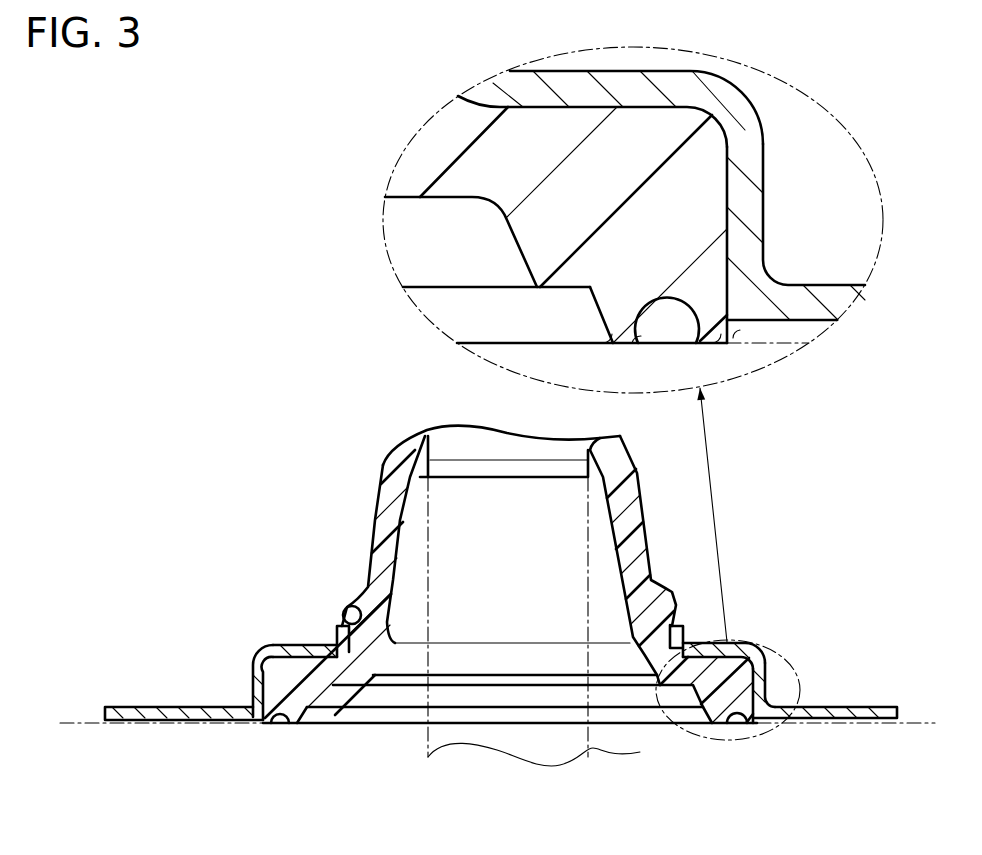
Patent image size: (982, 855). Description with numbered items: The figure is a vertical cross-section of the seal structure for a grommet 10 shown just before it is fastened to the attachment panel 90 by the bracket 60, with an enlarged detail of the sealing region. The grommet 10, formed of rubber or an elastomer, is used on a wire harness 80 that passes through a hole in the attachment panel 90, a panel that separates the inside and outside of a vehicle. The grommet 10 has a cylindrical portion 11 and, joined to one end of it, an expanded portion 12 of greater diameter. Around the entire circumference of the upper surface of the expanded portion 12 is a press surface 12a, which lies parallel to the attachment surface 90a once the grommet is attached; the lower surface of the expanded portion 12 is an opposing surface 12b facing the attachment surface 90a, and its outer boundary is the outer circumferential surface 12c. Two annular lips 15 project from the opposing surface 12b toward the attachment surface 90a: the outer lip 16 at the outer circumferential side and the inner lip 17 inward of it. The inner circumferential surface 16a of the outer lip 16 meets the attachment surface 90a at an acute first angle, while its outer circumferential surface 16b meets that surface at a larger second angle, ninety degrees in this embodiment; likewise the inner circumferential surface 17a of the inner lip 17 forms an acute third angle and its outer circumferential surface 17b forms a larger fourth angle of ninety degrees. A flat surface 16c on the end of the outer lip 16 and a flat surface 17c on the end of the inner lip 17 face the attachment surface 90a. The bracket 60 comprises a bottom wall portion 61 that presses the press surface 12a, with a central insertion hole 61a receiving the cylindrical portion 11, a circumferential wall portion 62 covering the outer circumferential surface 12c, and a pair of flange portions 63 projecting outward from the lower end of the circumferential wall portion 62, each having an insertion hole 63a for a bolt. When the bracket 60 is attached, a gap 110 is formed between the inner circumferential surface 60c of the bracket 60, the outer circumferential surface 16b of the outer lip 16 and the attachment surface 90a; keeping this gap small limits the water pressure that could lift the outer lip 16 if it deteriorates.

The grommet 10 is at (543, 394).
The cylindrical portion 11 is at (645, 515).
The expanded portion 12 is at (540, 394).
The press surface 12a is at (683, 105).
The opposing surface 12b is at (543, 292).
The outer circumferential surface 12c is at (728, 194).
The lips 15 is at (591, 474).
The outer lip 16 is at (591, 481).
The inner circumferential surface of the outer lip 16a is at (689, 318).
The outer circumferential surface of the outer lip 16b is at (752, 275).
The flat surface 16c is at (708, 343).
The inner lip 17 is at (512, 474).
The inner circumferential surface of the inner lip 17a is at (592, 298).
The outer circumferential surface of the inner lip 17b is at (615, 338).
The flat surface 17c is at (623, 345).
The bracket 60 is at (501, 391).
The inner circumferential surface 60c is at (718, 168).
The bottom wall portion 61 is at (530, 341).
The insertion hole 61a is at (363, 621).
The circumferential wall portion 62 is at (764, 222).
The flange portions 63 is at (501, 502).
The insertion hole 63a is at (180, 707).
The wire harness 80 is at (551, 753).
The attachment panel 90 is at (497, 560).
The attachment surface 90a is at (803, 338).
The gap 110 is at (733, 310).